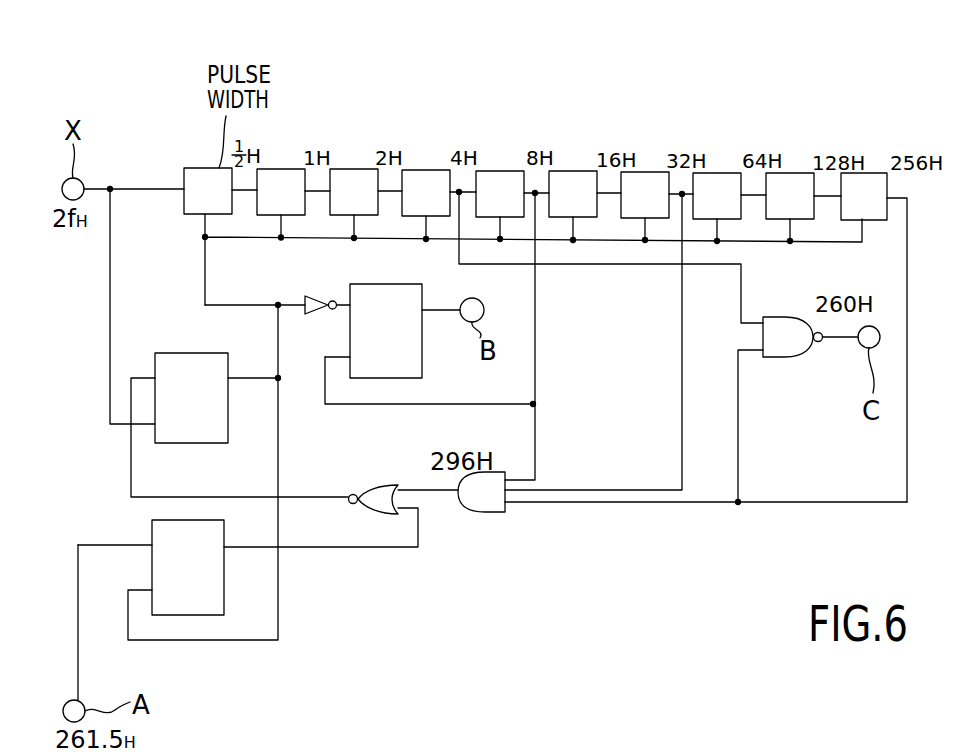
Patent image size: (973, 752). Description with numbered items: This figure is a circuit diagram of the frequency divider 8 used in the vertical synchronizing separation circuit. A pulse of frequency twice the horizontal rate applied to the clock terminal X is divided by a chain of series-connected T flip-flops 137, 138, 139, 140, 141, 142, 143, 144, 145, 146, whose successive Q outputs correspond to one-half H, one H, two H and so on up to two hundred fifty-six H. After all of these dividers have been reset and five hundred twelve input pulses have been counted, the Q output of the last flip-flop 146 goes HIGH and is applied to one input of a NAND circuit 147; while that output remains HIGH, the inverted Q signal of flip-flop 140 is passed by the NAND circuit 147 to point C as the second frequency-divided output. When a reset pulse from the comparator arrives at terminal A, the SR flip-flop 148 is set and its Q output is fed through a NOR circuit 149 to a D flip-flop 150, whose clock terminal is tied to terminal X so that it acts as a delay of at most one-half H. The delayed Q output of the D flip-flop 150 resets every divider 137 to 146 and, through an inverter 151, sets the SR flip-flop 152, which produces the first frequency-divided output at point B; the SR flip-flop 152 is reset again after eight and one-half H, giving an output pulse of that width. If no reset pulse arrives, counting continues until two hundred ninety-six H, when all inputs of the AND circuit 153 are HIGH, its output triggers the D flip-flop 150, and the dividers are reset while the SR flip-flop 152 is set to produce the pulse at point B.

The frequency divider 8 is at (662, 88).
The T flip-flop 137 is at (205, 168).
The T flip-flop 138 is at (281, 169).
The T flip-flop 139 is at (345, 169).
The T flip-flop 140 is at (417, 170).
The T flip-flop 141 is at (490, 171).
The T flip-flop 142 is at (565, 171).
The T flip-flop 143 is at (637, 172).
The T flip-flop 144 is at (709, 173).
The T flip-flop 145 is at (788, 173).
The T flip-flop 146 is at (860, 173).
The NAND circuit 147 is at (785, 357).
The SR flip-flop 148 is at (224, 562).
The NOR circuit 149 is at (378, 486).
The D flip-flop 150 is at (228, 420).
The inverter 151 is at (307, 316).
The SR flip-flop 152 is at (422, 357).
The AND circuit 153 is at (480, 512).